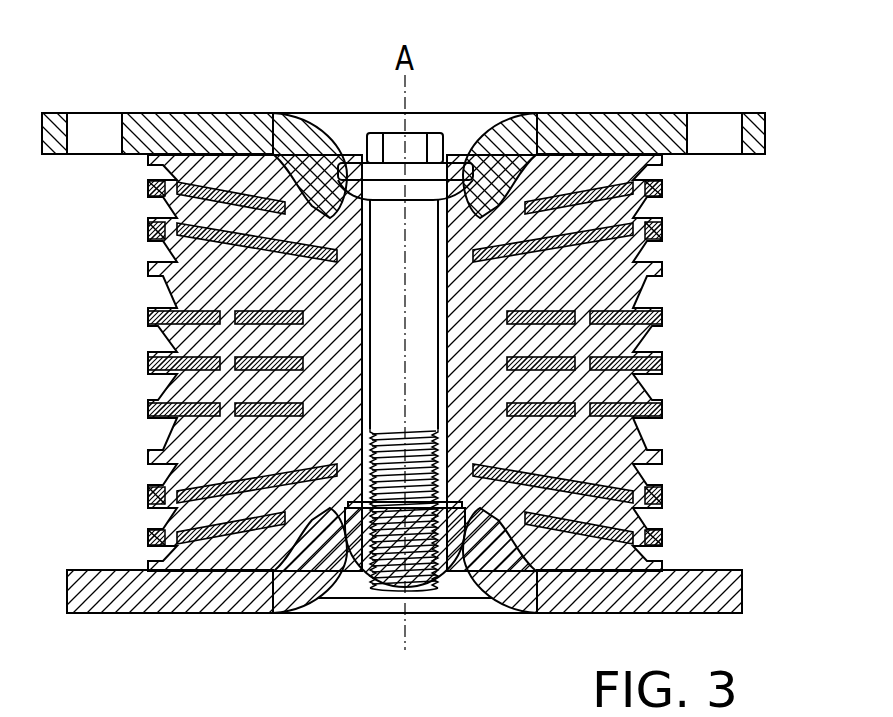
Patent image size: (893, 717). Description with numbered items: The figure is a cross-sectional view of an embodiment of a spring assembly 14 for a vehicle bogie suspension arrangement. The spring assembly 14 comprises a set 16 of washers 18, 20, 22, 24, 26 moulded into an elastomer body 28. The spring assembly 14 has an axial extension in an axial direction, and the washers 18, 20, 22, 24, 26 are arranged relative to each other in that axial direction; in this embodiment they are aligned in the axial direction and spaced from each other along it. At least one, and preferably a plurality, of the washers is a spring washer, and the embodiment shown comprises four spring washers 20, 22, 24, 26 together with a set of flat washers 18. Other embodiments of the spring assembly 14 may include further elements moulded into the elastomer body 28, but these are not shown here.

The spring assembly 14 is at (212, 77).
The set of washers 16 is at (777, 156).
The flat washers 18 is at (650, 335).
The spring washer 20 is at (607, 210).
The spring washer 22 is at (593, 255).
The spring washer 24 is at (612, 466).
The spring washer 26 is at (612, 516).
The elastomer body 28 is at (230, 296).